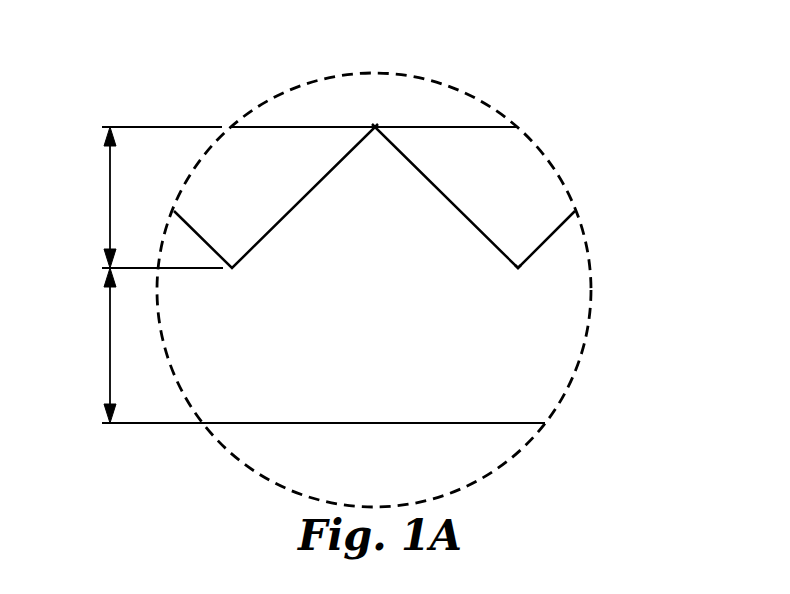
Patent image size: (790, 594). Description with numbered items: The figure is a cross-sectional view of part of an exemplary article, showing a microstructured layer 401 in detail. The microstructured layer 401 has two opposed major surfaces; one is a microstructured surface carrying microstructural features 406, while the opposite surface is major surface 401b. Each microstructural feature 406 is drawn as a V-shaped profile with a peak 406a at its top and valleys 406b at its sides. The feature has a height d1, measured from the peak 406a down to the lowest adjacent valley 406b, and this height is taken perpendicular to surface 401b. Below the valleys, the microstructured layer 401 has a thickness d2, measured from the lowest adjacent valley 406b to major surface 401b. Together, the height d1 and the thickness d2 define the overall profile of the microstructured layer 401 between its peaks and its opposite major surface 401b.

The microstructured layer 401 is at (562, 357).
The second major surface 401b is at (517, 423).
The microstructural features 406 is at (408, 190).
The peak 406a is at (375, 127).
The valley 406b is at (518, 268).
The height d1 is at (110, 198).
The thickness d2 is at (110, 348).